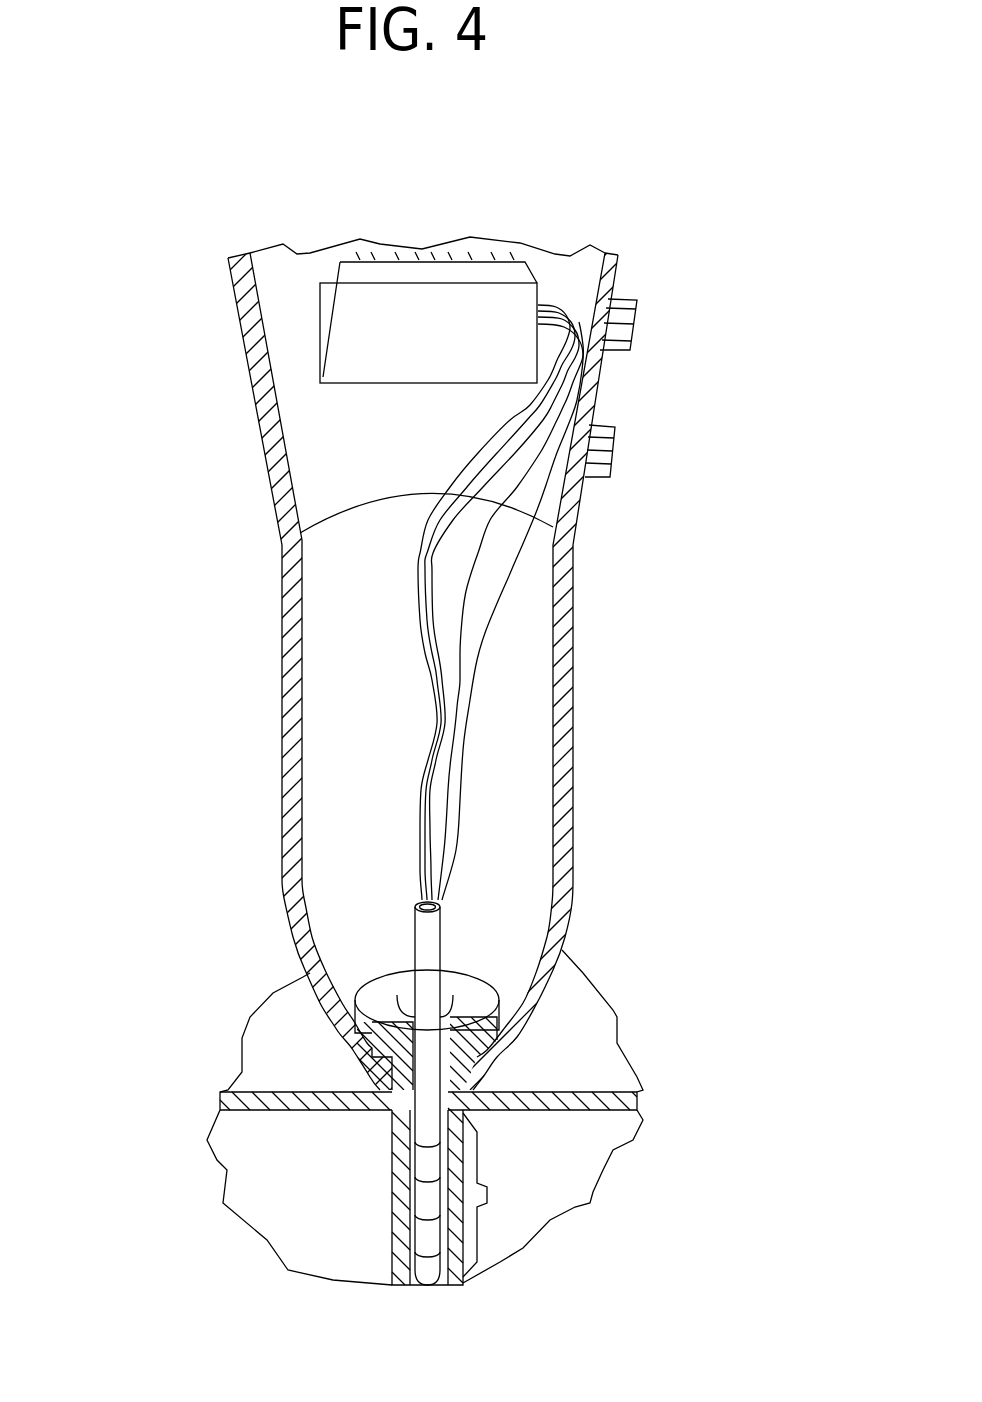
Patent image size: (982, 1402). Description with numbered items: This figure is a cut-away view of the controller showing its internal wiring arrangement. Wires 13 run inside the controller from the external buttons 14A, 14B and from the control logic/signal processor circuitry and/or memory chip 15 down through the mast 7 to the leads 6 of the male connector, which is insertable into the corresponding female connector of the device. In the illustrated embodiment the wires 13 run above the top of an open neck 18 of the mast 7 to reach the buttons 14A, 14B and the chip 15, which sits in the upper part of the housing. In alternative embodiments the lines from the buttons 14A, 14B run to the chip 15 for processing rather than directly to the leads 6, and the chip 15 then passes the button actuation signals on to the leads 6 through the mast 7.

The control logic/signal processor circuitry and/or memory chip 15 is at (485, 270).
The external button 14A is at (633, 330).
The external button 14B is at (603, 457).
The wires 13 is at (400, 666).
The open neck 18 is at (440, 897).
The mast 7 is at (430, 1012).
The leads 6 is at (490, 1192).